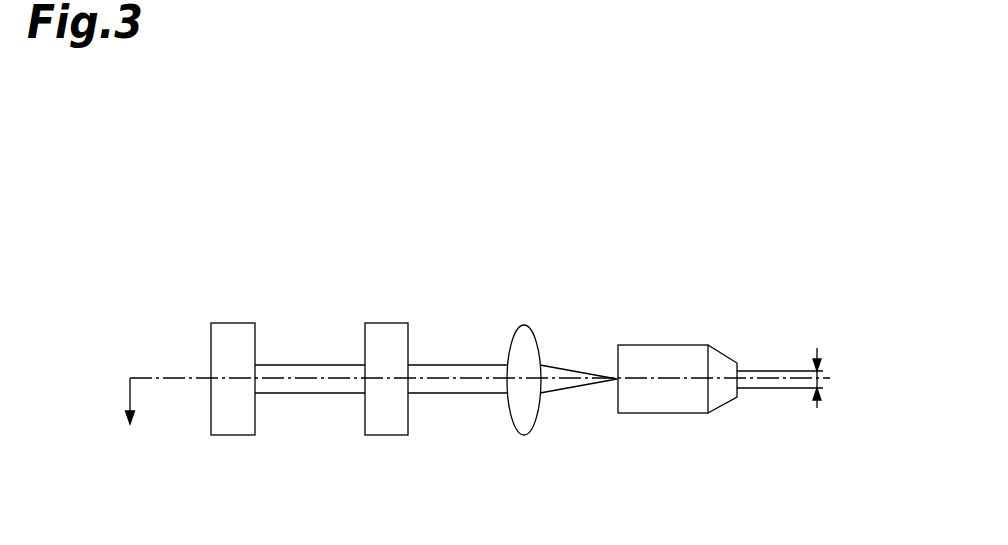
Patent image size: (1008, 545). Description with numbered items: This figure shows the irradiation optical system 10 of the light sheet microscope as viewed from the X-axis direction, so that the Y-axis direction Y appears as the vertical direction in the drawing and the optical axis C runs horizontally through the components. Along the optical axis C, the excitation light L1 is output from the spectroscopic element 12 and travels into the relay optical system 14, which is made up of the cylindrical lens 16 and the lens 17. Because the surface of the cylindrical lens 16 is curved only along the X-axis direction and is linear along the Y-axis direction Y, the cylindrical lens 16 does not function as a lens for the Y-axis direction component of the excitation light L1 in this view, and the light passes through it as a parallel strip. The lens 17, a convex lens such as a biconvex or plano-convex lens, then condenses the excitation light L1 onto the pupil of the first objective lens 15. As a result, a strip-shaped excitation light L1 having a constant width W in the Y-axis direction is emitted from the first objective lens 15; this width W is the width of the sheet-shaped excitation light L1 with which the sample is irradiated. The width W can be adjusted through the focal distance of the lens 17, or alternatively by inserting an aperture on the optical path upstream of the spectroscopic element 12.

The irradiation optical system 10 is at (604, 253).
The spectroscopic element 12 is at (237, 323).
The relay optical system 14 is at (368, 263).
The first objective lens 15 is at (663, 345).
The cylindrical lens 16 is at (388, 323).
The lens 17 is at (524, 325).
The excitation light L1 is at (311, 365).
The optical axis C is at (162, 378).
The Y-axis direction Y is at (118, 413).
The width W is at (826, 379).